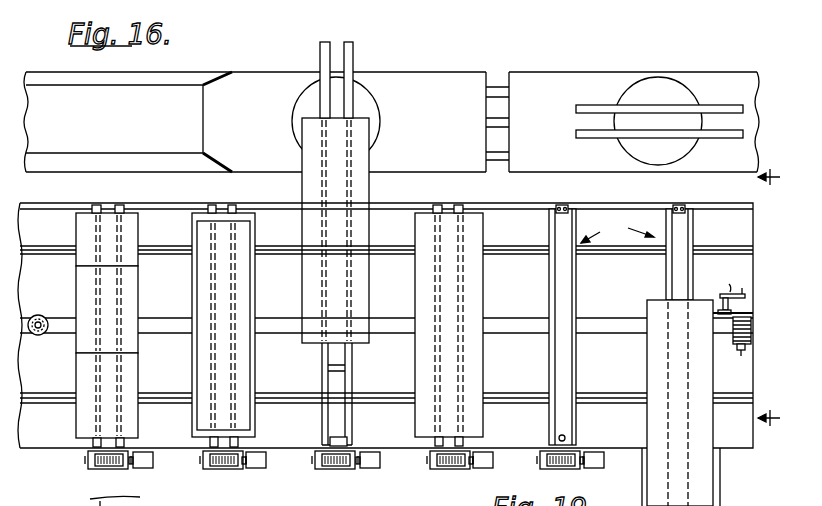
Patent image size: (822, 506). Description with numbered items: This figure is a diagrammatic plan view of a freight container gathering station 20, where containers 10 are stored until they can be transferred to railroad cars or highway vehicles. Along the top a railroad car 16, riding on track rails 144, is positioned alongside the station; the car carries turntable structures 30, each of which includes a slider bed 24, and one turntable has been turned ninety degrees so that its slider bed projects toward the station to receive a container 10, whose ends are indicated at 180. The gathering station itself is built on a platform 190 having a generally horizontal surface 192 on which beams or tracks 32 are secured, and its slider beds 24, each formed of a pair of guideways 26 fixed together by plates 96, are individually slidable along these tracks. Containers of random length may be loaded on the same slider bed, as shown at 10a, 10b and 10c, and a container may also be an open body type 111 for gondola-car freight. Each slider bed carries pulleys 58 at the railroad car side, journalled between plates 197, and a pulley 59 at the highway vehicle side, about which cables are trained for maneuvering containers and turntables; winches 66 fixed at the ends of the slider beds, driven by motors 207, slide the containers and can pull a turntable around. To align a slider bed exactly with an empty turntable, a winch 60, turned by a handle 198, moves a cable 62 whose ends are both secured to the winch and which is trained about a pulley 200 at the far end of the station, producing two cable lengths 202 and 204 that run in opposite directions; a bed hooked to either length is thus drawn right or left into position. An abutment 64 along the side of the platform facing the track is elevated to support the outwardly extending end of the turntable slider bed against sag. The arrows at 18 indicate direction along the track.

The container 10 is at (110, 124).
The container body 10a is at (82, 418).
The container body 10b is at (84, 293).
The container body 10c is at (82, 236).
The railroad car 16 is at (427, 78).
The direction of conveyor travel 18 is at (770, 291).
The gathering station 20 is at (634, 116).
The slider bed structure 24 is at (617, 228).
The guideways 26 is at (566, 316).
The turntable structure 30 is at (357, 67).
The tracks 32 is at (389, 250).
The pulleys 58 is at (457, 205).
The pulley 59 is at (566, 434).
The winch 60 is at (740, 350).
The cable 62 is at (514, 318).
The abutment 64 is at (528, 207).
The winch 66 is at (107, 469).
The plates 96 is at (340, 365).
The open body type 111 is at (202, 412).
The track rails 144 is at (498, 78).
The container end 180 is at (215, 72).
The platform 190 is at (738, 452).
The horizontal surface 192 is at (612, 440).
The plates 197 is at (582, 199).
The handle 198 is at (730, 288).
The pulley 200 is at (40, 337).
The cable length 202 is at (275, 318).
The cable length 204 is at (288, 334).
The motors 207 is at (253, 469).